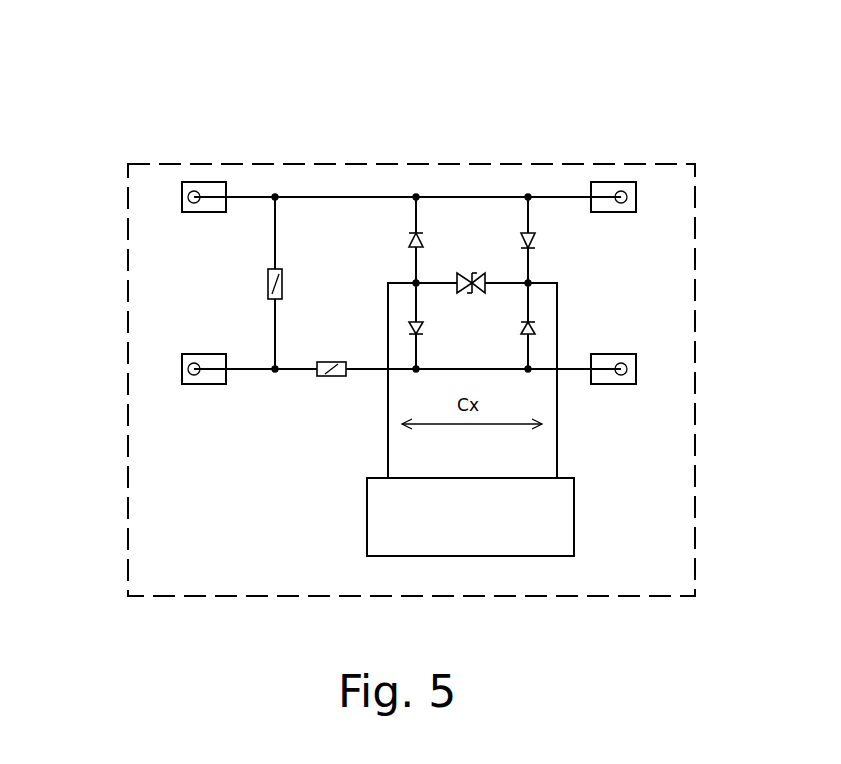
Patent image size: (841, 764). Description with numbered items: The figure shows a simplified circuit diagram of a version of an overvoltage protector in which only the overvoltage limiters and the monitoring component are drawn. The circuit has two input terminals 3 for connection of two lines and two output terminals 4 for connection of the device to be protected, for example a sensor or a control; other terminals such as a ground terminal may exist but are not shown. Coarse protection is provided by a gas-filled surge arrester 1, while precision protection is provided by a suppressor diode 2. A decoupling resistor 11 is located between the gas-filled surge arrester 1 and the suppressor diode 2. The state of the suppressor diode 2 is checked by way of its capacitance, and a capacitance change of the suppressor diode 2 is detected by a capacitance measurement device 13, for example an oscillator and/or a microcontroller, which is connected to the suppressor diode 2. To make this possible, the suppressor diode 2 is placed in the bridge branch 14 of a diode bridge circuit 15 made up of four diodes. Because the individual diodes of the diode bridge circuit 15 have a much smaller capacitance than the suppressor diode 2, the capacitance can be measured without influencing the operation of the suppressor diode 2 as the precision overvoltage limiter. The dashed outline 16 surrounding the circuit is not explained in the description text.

The gas-filled surge arrester 1 is at (283, 268).
The suppressor diode 2 is at (476, 247).
The input terminals 3 is at (188, 197).
The output terminals 4 is at (628, 197).
The decoupling resistor 11 is at (328, 376).
The capacitance measurement device 13 is at (470, 517).
The bridge branch 14 is at (497, 282).
The diode bridge circuit 15 is at (431, 172).
The housing 16 is at (238, 597).